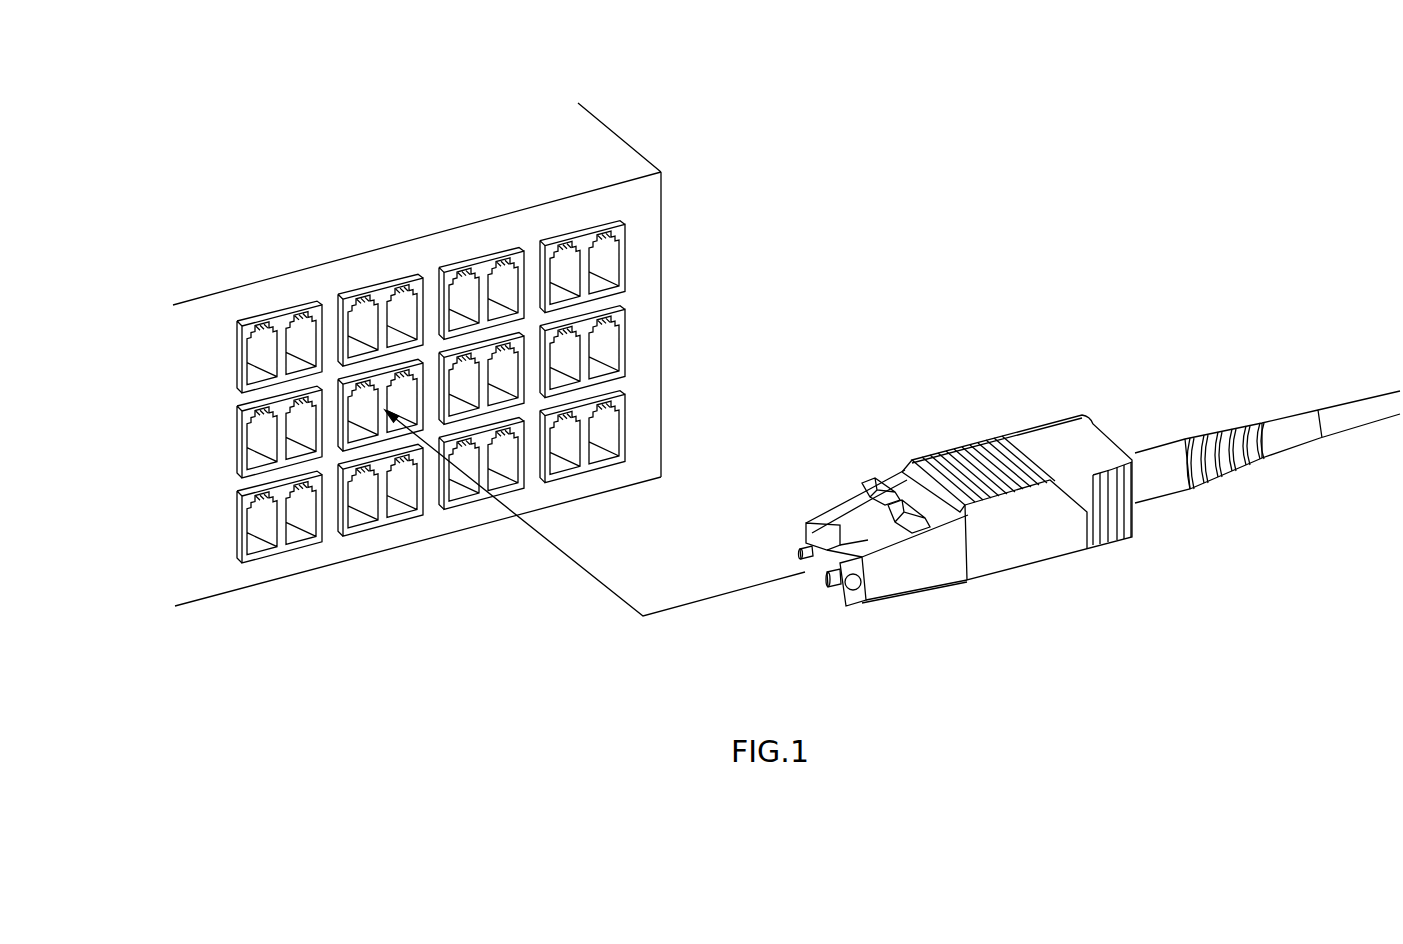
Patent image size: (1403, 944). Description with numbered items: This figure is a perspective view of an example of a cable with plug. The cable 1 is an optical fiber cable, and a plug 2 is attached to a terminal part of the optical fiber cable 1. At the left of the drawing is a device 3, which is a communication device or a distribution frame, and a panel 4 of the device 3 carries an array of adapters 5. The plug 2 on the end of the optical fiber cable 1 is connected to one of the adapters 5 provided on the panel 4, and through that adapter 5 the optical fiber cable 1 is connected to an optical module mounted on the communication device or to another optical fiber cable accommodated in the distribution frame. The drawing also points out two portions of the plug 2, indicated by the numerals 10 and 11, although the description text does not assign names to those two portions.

The optical fiber cable 1 is at (1348, 428).
The plug 2 is at (959, 466).
The device 3 is at (610, 130).
The panel 4 is at (648, 250).
The adapter 5 is at (282, 552).
The connector plug body 10 is at (843, 510).
The connector housing / grip 11 is at (1017, 466).